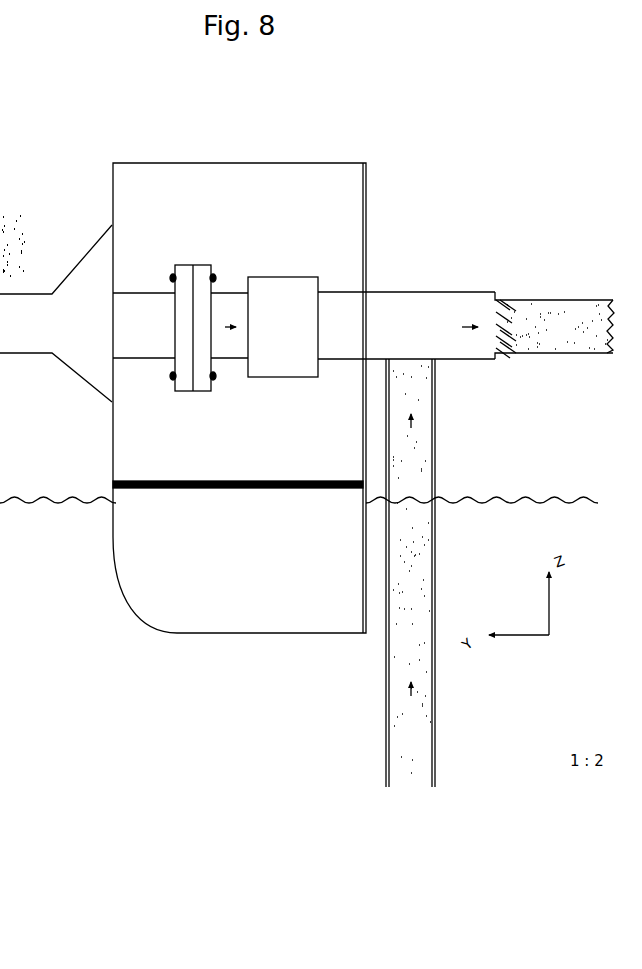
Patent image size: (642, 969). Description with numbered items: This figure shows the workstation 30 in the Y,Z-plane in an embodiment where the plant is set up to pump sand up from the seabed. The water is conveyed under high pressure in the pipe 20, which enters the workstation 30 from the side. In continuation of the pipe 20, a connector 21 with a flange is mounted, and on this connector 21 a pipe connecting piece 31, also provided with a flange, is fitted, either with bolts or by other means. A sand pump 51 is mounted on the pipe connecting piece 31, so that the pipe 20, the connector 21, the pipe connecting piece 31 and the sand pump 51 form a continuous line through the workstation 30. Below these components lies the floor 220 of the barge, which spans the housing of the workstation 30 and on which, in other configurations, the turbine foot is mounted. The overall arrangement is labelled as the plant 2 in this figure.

The hydrogen fuel apparatus 2 is at (332, 217).
The hydrogen supply / fuel source 20 is at (35, 278).
The flange connection 21 is at (163, 283).
The housing 30 is at (220, 149).
The fuel line / pipe 31 is at (231, 277).
The valve unit 51 is at (281, 273).
The partition plate 220 is at (253, 485).